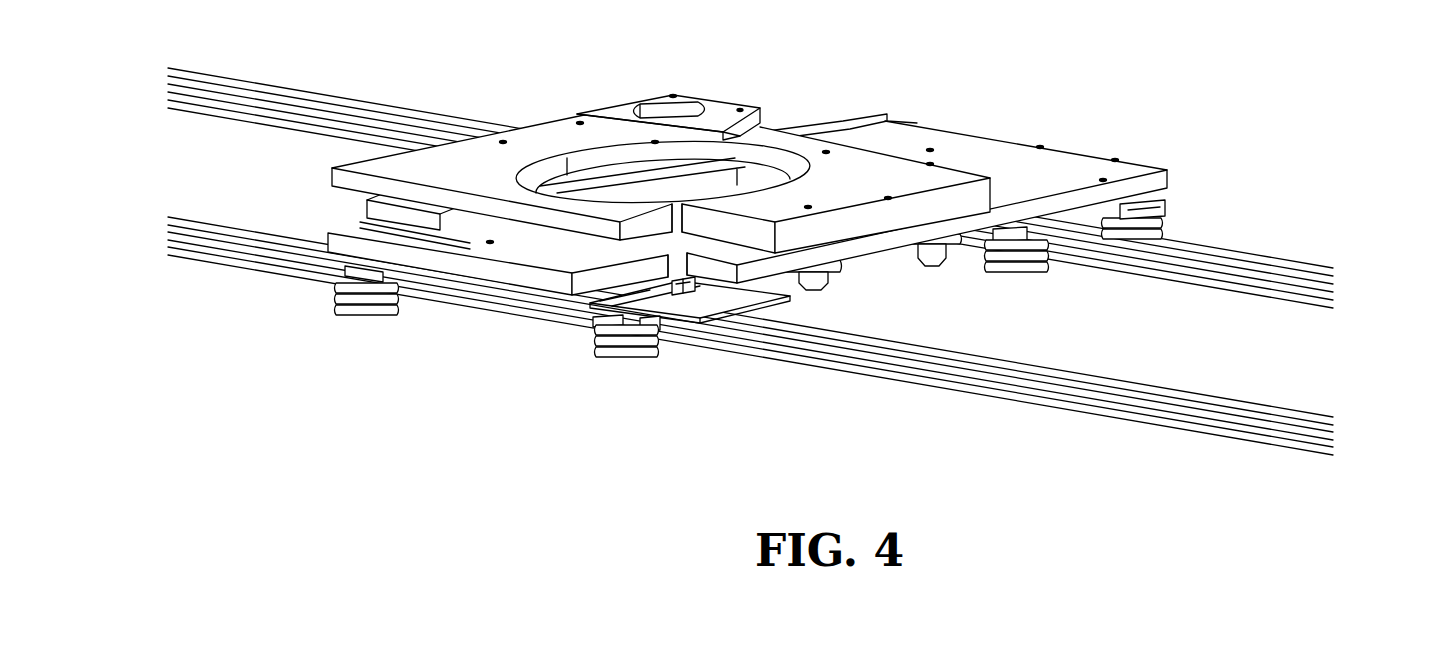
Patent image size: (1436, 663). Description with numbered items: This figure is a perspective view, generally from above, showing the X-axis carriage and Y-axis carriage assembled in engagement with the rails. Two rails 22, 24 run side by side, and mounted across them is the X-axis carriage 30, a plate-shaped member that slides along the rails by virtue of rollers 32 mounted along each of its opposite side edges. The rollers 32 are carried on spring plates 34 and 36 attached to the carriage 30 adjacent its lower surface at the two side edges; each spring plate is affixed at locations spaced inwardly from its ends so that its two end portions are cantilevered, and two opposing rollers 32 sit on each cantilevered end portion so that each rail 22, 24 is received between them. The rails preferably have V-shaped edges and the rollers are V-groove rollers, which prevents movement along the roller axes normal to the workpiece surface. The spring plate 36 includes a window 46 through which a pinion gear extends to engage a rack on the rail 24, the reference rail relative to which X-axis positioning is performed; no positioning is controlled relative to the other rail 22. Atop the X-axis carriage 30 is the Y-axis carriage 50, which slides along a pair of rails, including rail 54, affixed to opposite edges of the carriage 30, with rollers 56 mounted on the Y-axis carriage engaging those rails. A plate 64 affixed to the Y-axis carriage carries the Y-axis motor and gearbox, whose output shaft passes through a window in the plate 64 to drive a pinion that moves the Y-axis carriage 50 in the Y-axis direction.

The rail 22 is at (1305, 270).
The rail 24 is at (1197, 425).
The X-axis carriage 30 is at (1050, 157).
The rollers 32 is at (585, 347).
The spring plate 34 is at (1158, 206).
The spring plate 36 is at (681, 308).
The window 46 is at (723, 313).
The Y-axis carriage 50 is at (547, 140).
The rail 54 is at (373, 223).
The rollers 56 is at (933, 223).
The plate 64 is at (723, 110).